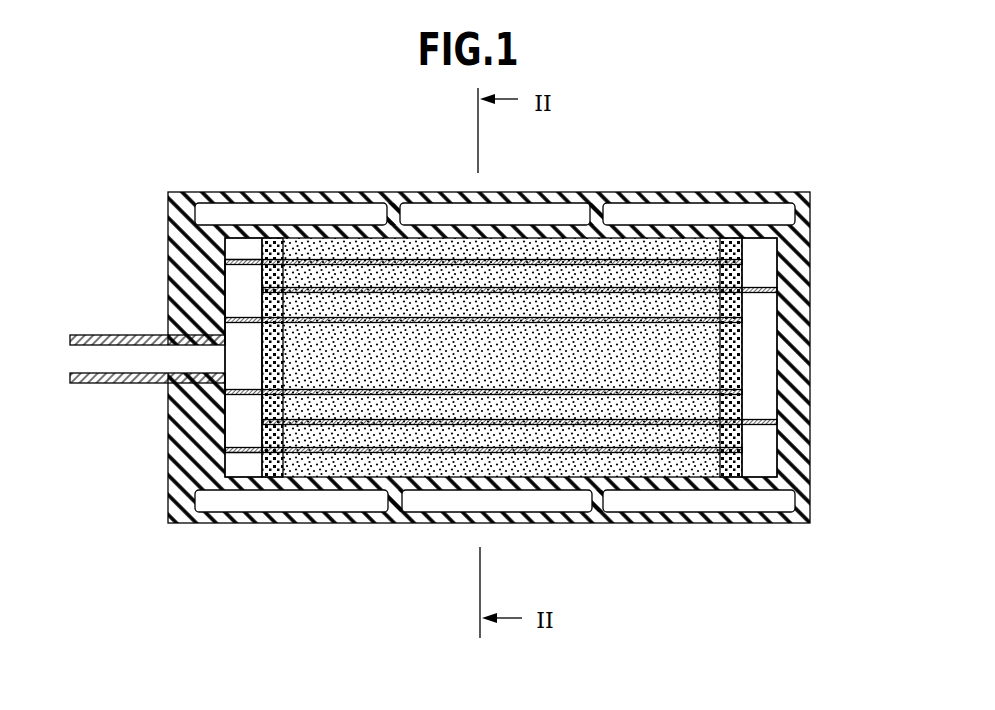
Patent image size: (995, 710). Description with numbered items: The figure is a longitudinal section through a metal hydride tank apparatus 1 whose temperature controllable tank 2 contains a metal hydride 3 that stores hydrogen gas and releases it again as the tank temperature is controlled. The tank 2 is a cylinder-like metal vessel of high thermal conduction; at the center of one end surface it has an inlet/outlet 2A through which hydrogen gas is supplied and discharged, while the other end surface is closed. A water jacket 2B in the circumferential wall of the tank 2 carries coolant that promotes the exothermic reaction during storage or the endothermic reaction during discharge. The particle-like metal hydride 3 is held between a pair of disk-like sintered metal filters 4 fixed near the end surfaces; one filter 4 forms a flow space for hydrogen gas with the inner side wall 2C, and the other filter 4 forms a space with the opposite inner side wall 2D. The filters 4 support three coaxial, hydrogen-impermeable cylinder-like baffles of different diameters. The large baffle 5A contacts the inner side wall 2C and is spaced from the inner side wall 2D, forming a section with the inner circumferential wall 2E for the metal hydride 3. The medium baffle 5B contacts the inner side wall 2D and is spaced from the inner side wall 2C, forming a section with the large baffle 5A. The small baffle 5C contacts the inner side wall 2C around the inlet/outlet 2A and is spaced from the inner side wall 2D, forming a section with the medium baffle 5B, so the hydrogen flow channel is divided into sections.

The metal hydride tank apparatus 1 is at (464, 328).
The tank 2 is at (530, 361).
The inlet/outlet 2A is at (131, 335).
The water jacket 2B is at (268, 210).
The inner side wall 2C is at (250, 465).
The inner side wall 2D is at (777, 394).
The inner circumferential wall 2E is at (585, 205).
The metal hydride 3 is at (525, 300).
The filter 4 is at (262, 357).
The large cylinder-like baffle 5A is at (265, 255).
The medium cylinder-like baffle 5B is at (760, 285).
The small cylinder-like baffle 5C is at (248, 318).